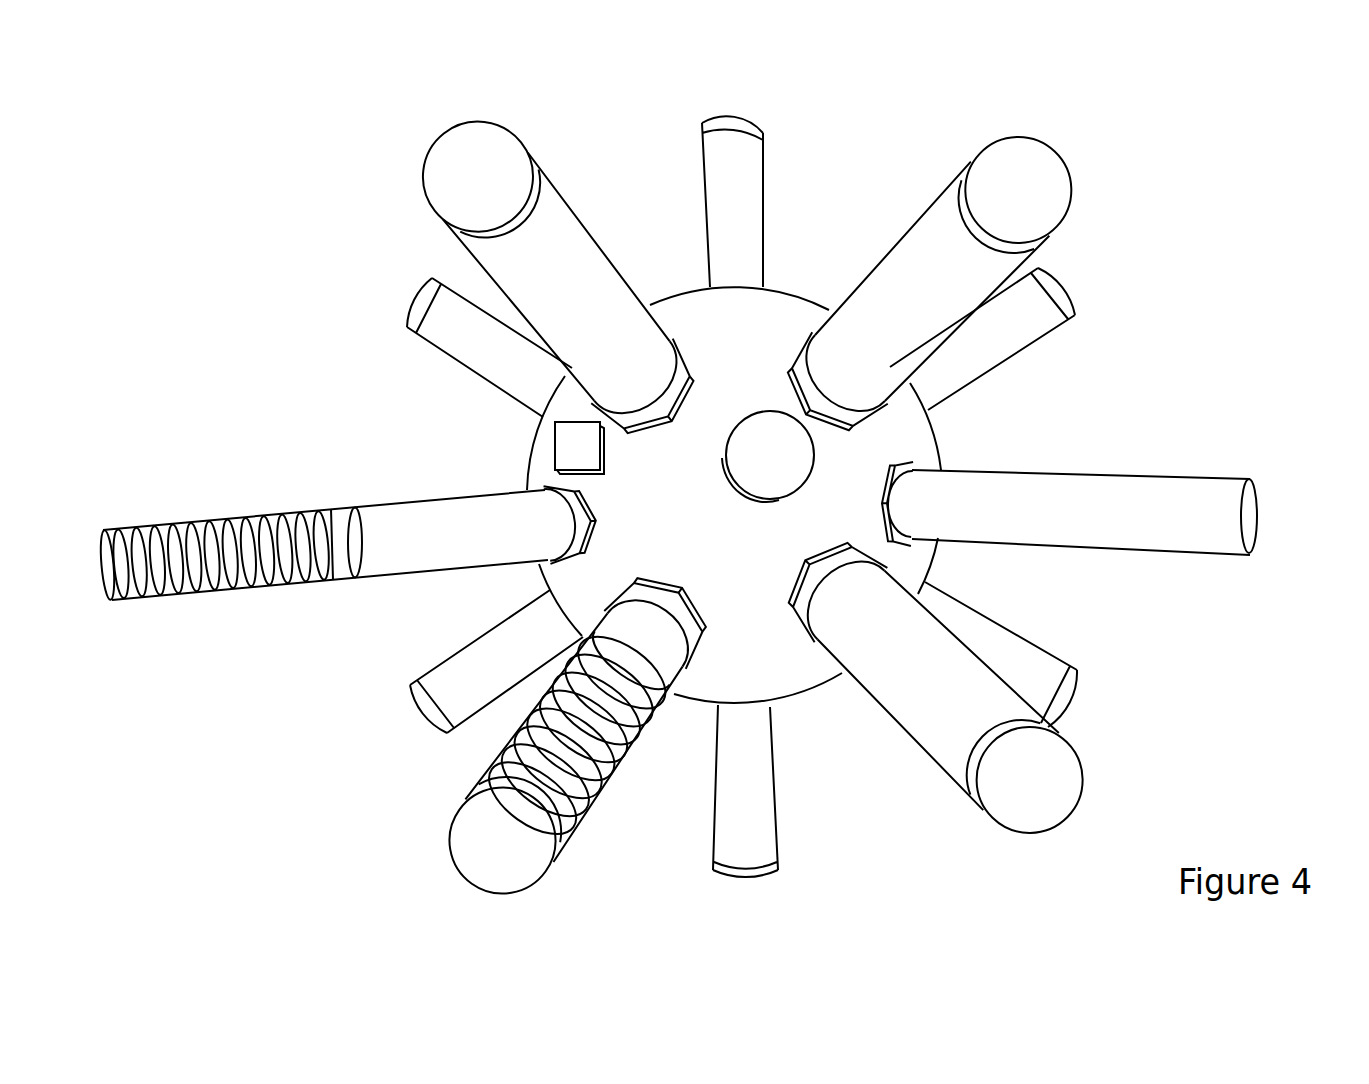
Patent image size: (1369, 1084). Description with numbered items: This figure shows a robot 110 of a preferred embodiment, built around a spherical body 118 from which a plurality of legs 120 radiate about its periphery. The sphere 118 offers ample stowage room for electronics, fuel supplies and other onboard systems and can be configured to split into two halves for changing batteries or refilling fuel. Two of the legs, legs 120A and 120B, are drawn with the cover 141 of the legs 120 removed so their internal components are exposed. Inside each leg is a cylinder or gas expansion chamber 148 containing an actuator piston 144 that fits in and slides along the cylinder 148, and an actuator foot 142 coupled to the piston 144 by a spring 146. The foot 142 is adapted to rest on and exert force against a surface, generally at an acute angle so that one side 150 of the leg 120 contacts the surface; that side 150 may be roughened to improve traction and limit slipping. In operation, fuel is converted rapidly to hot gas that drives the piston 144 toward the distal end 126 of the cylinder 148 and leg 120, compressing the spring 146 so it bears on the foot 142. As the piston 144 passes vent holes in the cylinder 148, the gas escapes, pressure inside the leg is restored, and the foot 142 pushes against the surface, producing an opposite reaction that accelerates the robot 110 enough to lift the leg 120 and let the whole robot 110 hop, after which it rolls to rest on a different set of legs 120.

The robot 110 is at (1148, 173).
The spherical body 118 is at (782, 292).
The leg 120 is at (1195, 455).
The leg 120A is at (441, 774).
The leg 120B is at (205, 605).
The distal end 126 is at (100, 493).
The cover 141 is at (1052, 470).
The actuator foot 142 is at (1258, 503).
The actuator piston 144 is at (362, 555).
The spring 146 is at (297, 580).
The cylinder 148 is at (491, 550).
The side 150 is at (568, 447).